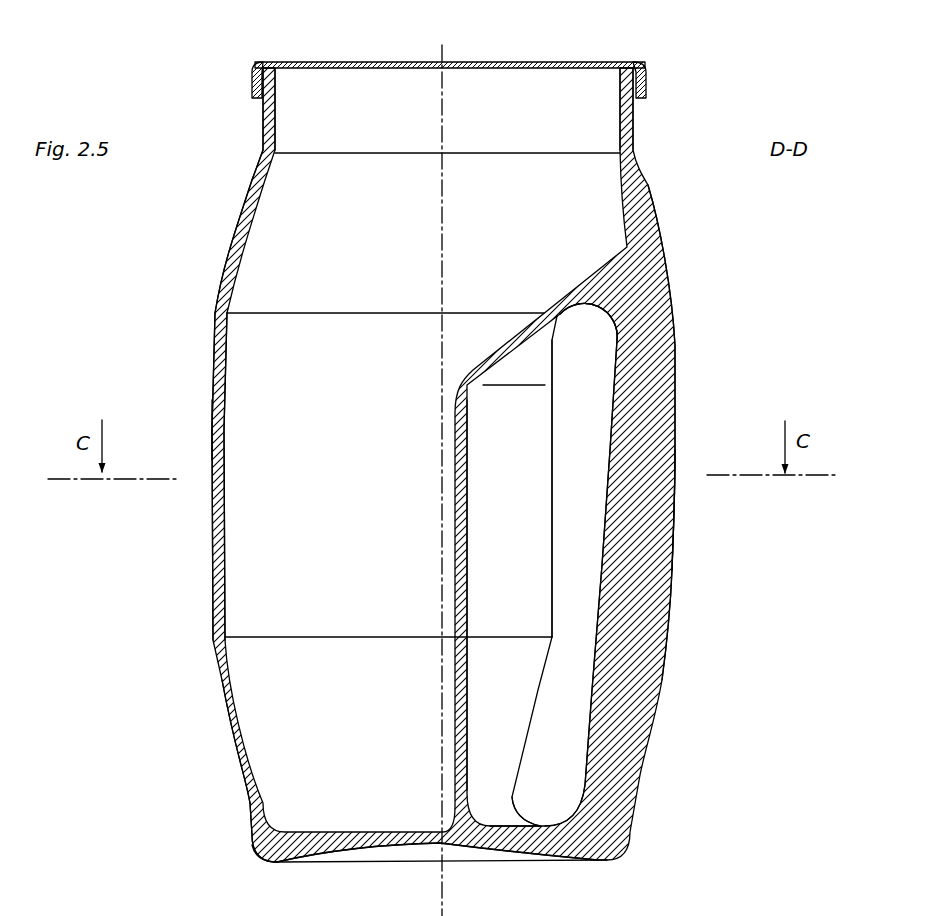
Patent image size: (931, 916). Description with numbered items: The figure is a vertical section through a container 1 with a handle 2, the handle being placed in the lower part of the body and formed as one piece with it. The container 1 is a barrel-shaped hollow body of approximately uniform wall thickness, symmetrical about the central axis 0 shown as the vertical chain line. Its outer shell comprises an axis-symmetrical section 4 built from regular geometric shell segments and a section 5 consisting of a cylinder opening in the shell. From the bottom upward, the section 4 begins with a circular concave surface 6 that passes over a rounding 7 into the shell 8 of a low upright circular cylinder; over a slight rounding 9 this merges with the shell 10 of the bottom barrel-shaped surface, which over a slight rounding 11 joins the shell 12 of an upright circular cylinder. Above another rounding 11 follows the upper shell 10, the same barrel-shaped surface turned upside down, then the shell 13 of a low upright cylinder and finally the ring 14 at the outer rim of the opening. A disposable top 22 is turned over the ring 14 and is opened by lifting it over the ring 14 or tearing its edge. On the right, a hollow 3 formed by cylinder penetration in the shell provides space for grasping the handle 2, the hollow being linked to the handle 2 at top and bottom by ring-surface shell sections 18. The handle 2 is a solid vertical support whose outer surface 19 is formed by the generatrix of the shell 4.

The central axis 0 is at (440, 486).
The container 1 is at (188, 555).
The handle 2 is at (690, 536).
The hollow 3 is at (565, 722).
The section of outer shell 4 is at (213, 427).
The section of outer shell 5 is at (600, 565).
The circular concave surface 6 is at (373, 848).
The rounding 7 is at (260, 857).
The shell of low upright circular cylinder 8 is at (253, 828).
The slight rounding 9 is at (263, 153).
The shell of barrel-shaped surface 10 is at (235, 238).
The slight rounding 11 is at (215, 313).
The shell of upright circular cylinder 12 is at (215, 378).
The shell of low upright circular cylinder 13 is at (263, 118).
The ring 14 is at (252, 70).
The shell sections 18 is at (585, 308).
The outer surface of handle 19 is at (674, 392).
The disposable top 22 is at (538, 62).